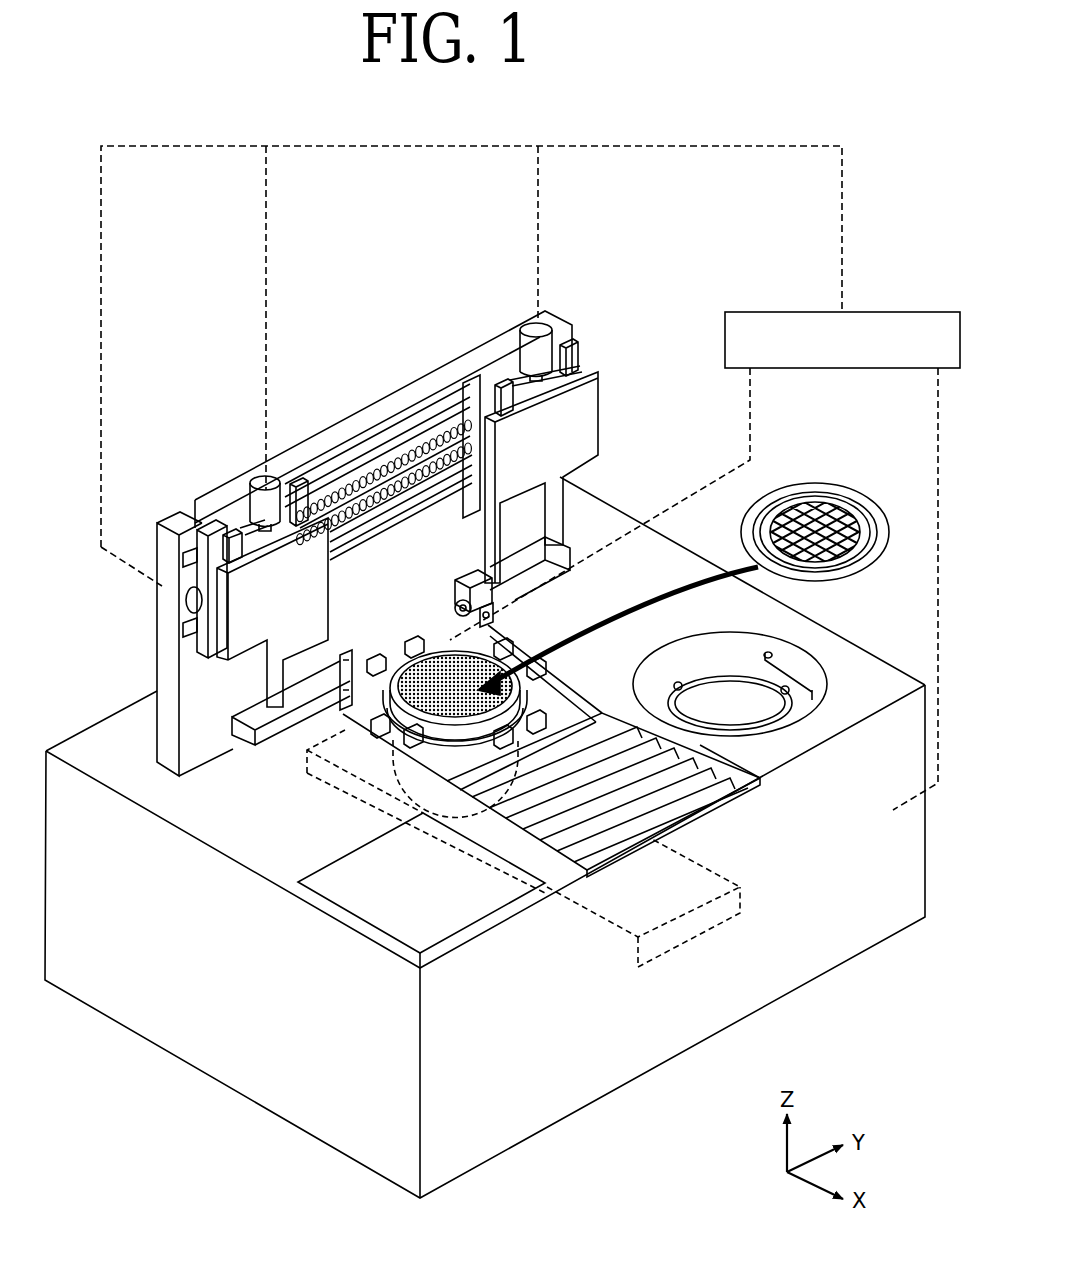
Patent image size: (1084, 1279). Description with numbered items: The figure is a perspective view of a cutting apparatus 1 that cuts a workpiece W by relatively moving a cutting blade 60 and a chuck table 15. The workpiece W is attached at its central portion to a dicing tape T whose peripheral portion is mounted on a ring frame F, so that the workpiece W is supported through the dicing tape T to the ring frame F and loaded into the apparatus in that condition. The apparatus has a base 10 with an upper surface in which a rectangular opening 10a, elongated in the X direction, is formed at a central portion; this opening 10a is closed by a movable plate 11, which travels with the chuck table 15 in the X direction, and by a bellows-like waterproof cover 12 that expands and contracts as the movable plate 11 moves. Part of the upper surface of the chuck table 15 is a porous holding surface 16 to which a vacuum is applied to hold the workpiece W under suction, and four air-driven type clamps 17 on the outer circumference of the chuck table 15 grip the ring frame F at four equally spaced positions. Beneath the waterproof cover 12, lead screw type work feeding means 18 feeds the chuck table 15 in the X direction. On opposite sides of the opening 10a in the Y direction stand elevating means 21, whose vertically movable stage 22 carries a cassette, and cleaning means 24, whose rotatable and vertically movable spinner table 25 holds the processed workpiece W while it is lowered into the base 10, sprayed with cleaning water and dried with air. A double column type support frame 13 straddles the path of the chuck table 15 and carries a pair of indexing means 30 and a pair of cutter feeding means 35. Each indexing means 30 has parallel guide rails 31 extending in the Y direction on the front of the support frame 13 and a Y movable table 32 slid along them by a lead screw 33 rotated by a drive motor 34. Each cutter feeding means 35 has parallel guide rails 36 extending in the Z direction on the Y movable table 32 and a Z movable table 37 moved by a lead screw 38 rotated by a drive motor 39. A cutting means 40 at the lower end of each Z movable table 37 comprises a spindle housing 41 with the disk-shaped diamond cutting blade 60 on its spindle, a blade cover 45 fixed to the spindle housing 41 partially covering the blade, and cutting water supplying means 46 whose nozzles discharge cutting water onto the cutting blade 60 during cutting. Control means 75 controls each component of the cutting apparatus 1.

The cutting apparatus 1 is at (90, 268).
The base 10 is at (878, 668).
The rectangular opening 10a is at (748, 776).
The movable plate 11 is at (552, 690).
The bellows-like waterproof cover 12 is at (618, 730).
The double column type support frame 13 is at (155, 661).
The chuck table 15 is at (398, 668).
The porous holding surface 16 is at (446, 660).
The air-driven type clamps 17 is at (520, 722).
The lead screw type work feeding means 18 is at (602, 947).
The elevating means 21 is at (375, 862).
The stage 22 is at (326, 875).
The cleaning means 24 is at (730, 672).
The spinner table 25 is at (722, 700).
The indexing means 30 is at (383, 474).
The guide rails 31 is at (185, 558).
The Y movable table 32 is at (205, 527).
The lead screw 33 is at (430, 447).
The drive motor 34 is at (190, 600).
The cutter feeding means 35 is at (398, 484).
The guide rails 36 is at (228, 530).
The Z movable table 37 is at (248, 650).
The lead screw 38 is at (245, 525).
The drive motor 39 is at (263, 478).
The cutting means 40 is at (438, 643).
The spindle housing 41 is at (270, 740).
The blade cover 45 is at (478, 585).
The cutting water supplying means 46 is at (496, 606).
The cutting blade 60 is at (494, 620).
The control means 75 is at (890, 312).
The ring frame F is at (812, 486).
The workpiece W is at (845, 508).
The dicing tape T is at (872, 535).